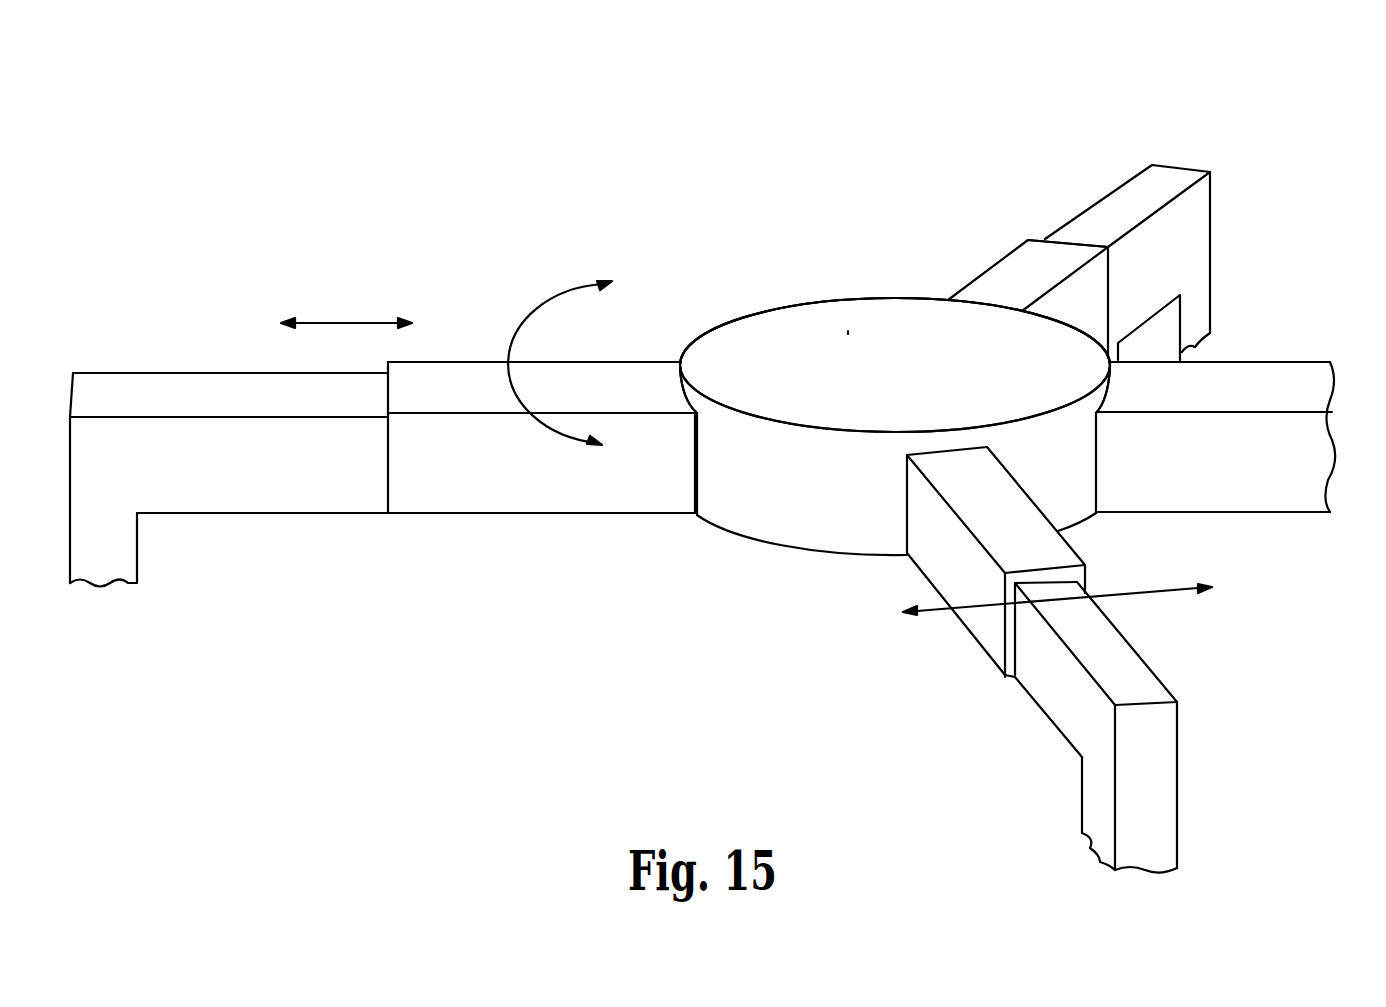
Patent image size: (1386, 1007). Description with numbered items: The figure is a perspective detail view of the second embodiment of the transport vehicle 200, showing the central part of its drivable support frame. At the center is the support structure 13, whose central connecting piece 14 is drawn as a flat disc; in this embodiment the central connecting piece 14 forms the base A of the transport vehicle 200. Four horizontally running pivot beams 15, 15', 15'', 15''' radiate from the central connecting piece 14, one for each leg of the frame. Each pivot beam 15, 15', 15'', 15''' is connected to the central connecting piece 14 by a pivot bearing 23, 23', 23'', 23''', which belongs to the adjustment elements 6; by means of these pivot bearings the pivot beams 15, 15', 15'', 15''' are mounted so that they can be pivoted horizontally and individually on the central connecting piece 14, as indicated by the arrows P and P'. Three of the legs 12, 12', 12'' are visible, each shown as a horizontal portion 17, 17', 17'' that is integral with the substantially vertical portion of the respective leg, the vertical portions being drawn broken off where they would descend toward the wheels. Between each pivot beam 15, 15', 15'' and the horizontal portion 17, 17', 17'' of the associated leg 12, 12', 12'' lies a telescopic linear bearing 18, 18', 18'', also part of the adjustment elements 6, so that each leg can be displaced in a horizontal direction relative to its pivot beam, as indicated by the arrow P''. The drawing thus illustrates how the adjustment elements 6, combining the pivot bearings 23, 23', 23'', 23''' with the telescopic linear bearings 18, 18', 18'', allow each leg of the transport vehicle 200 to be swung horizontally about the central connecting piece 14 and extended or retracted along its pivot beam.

The transport vehicle 200 is at (560, 110).
The adjustment element 6 is at (688, 324).
The support structure 13 is at (774, 240).
The central connecting piece 14 is at (898, 330).
The base A is at (848, 331).
The leg 12 is at (1129, 858).
The leg 12' is at (103, 547).
The leg 12'' is at (1127, 206).
The pivot beam 15 is at (994, 606).
The pivot beam 15' is at (542, 397).
The pivot beam 15'' is at (1028, 216).
The pivot beam 15''' is at (1232, 383).
The horizontal portion 17 is at (1123, 726).
The horizontal portion 17' is at (229, 386).
The horizontal portion 17'' is at (1082, 231).
The telescopic linear bearing 18 is at (996, 663).
The telescopic linear bearing 18' is at (411, 498).
The telescopic linear bearing 18'' is at (1024, 219).
The pivot bearing 23 is at (946, 538).
The pivot bearing 23' is at (697, 299).
The pivot bearing 23'' is at (998, 299).
The pivot bearing 23''' is at (1211, 279).
The arrow P is at (1057, 569).
The arrow P' is at (537, 341).
The arrow P'' is at (346, 280).